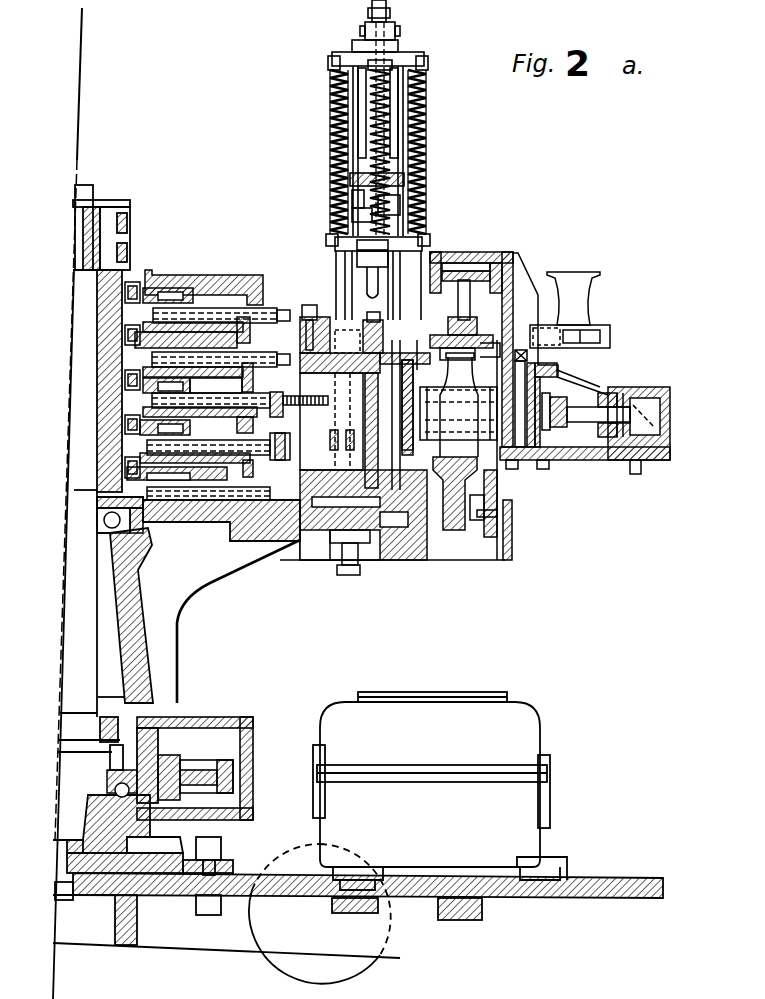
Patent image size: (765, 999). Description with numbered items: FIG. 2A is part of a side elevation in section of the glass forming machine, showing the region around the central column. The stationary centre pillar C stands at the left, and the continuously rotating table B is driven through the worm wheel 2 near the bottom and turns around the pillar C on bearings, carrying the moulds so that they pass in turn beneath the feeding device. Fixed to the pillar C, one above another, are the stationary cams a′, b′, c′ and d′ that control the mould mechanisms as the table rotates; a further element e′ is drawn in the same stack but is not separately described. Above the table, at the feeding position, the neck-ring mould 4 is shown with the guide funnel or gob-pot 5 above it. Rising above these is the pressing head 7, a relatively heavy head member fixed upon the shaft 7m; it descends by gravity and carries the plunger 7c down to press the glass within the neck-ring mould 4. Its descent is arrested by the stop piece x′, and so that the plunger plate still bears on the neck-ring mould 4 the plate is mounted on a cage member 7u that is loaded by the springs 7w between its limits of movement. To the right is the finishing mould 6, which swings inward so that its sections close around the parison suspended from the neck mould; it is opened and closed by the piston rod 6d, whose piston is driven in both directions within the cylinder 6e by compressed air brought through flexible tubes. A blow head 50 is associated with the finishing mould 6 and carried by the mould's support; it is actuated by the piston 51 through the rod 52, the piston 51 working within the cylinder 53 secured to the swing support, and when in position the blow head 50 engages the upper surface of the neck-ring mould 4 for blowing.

The pressing head 7 is at (387, 223).
The cage member 7u is at (427, 100).
The springs 7w is at (332, 123).
The plunger 7c is at (374, 291).
The shaft 7m is at (357, 568).
The stop piece x′ is at (347, 317).
The blow head 50 is at (430, 335).
The rod 52 is at (457, 306).
The cylinder 53 is at (437, 251).
The piston 51 is at (508, 254).
The neck-ring mould 4 is at (505, 346).
The guide funnel or gob-pot 5 is at (594, 290).
The finishing mould 6 is at (492, 458).
The piston rod 6d is at (585, 416).
The cylinder 6e is at (650, 397).
The continuously rotating table B is at (420, 560).
The stationary centre pillar C is at (80, 326).
The stationary cam a′ is at (180, 290).
The stationary cam b′ is at (100, 357).
The stationary cam c′ is at (103, 407).
The stationary cam d′ is at (110, 447).
The fourth shaft e′ is at (107, 475).
The worm wheel 2 is at (233, 778).